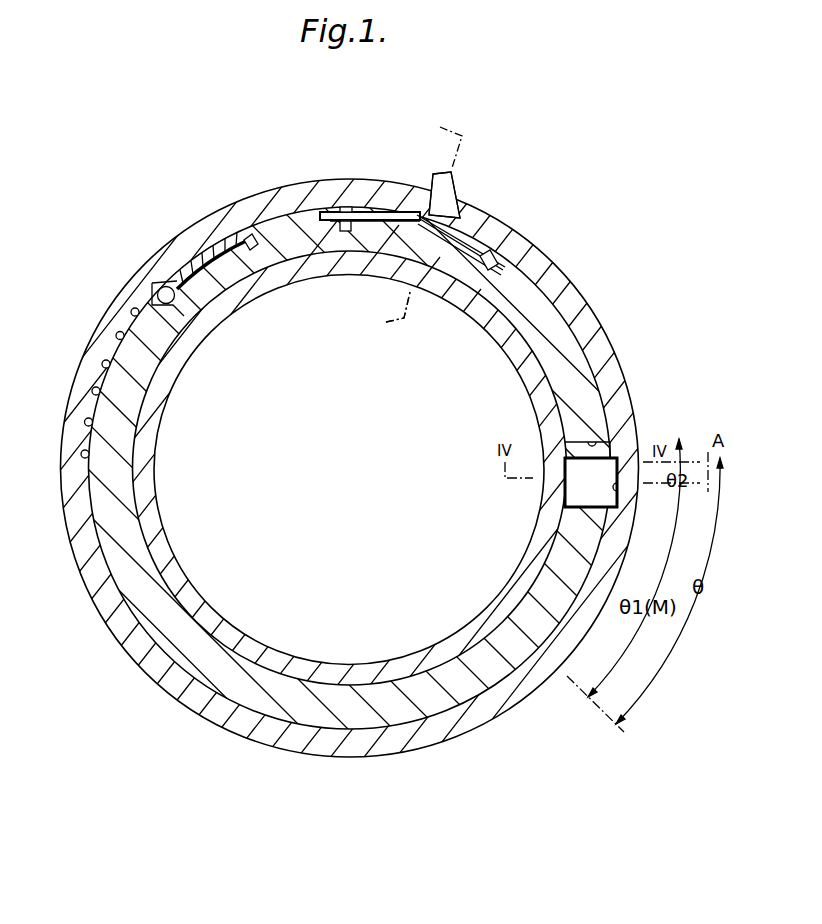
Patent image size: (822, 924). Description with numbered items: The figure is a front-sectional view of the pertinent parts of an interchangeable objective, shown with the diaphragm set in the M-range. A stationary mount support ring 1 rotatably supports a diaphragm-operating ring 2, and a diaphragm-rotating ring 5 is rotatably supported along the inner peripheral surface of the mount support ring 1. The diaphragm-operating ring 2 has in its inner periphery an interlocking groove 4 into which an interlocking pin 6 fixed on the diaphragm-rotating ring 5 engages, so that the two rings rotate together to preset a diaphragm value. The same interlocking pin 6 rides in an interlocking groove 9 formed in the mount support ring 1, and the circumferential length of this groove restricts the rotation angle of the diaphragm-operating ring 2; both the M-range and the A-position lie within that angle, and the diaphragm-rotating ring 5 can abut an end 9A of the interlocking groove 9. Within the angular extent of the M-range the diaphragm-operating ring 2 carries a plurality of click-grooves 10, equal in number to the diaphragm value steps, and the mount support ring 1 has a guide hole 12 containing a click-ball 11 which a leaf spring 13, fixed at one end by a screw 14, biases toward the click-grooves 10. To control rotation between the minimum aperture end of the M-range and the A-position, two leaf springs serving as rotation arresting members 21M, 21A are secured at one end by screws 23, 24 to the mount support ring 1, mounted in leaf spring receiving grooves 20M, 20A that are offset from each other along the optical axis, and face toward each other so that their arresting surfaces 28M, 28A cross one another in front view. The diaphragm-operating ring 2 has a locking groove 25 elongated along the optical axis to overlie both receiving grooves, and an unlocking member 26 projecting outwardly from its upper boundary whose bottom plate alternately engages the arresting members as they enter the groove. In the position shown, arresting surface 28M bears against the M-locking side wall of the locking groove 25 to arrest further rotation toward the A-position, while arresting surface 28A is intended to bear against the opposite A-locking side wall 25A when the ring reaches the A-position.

The mount support ring 1 is at (565, 338).
The diaphragm-operating ring 2 is at (289, 196).
The interlocking groove 4 is at (622, 500).
The diaphragm-rotating ring 5 is at (513, 595).
The interlocking pin 6 is at (605, 473).
The interlocking groove 9 is at (563, 560).
The end of interlocking groove 9A is at (623, 397).
The click-grooves 10 is at (85, 423).
The click-ball 11 is at (156, 289).
The guide hole 12 is at (163, 280).
The leaf spring 13 is at (203, 243).
The screw 14 is at (244, 236).
The leaf spring receiving groove 20M is at (428, 236).
The leaf spring receiving groove 20A is at (398, 307).
The rotation arresting member for M 21M is at (389, 210).
The rotation arresting member for A 21A is at (508, 248).
The screw 23 is at (347, 207).
The screw 24 is at (543, 267).
The locking groove 25 is at (450, 196).
The A-locking side wall 25A is at (444, 195).
The unlocking member 26 is at (455, 181).
The arresting surface 28M is at (466, 212).
The arresting surface 28A is at (368, 232).